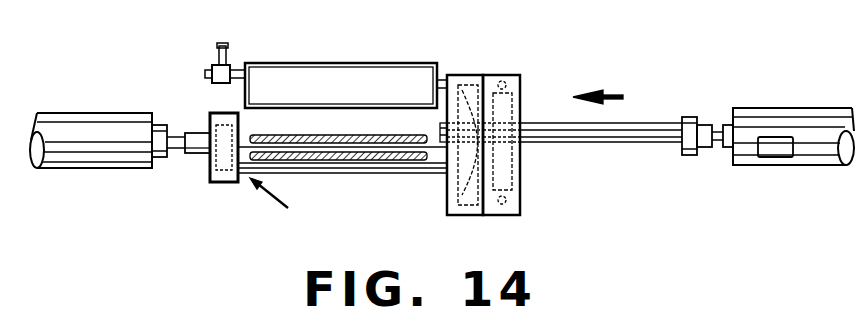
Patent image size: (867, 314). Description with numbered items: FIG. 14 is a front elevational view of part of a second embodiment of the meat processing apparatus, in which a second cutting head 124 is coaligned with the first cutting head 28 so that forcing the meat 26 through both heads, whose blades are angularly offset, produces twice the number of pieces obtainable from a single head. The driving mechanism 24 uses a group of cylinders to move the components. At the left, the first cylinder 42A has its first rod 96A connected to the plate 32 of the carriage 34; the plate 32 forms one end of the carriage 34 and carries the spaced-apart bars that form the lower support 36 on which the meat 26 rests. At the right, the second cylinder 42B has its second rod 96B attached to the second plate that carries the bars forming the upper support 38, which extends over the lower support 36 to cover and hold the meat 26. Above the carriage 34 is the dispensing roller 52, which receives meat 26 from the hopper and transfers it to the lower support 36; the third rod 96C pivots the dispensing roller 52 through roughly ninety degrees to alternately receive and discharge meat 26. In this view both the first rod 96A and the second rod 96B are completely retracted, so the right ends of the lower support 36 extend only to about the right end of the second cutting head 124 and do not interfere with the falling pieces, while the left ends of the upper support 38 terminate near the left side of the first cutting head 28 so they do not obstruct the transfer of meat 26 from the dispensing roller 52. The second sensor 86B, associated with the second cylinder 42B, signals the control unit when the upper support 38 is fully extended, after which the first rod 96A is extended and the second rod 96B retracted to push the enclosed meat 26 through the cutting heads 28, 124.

The driving mechanism 24 is at (62, 122).
The first cylinder 42A is at (98, 124).
The second cylinder 42B is at (826, 117).
The first rod 96A is at (182, 135).
The second rod 96B is at (722, 125).
The third rod 96C is at (217, 58).
The dispensing roller 52 is at (343, 63).
The cutting head 28 is at (462, 75).
The second cutting head 124 is at (508, 75).
The meat 26 is at (340, 135).
The lower support 36 is at (338, 174).
The plate 32 is at (236, 182).
The carriage 34 is at (281, 207).
The upper support 38 is at (590, 143).
The second sensor 86B is at (773, 157).